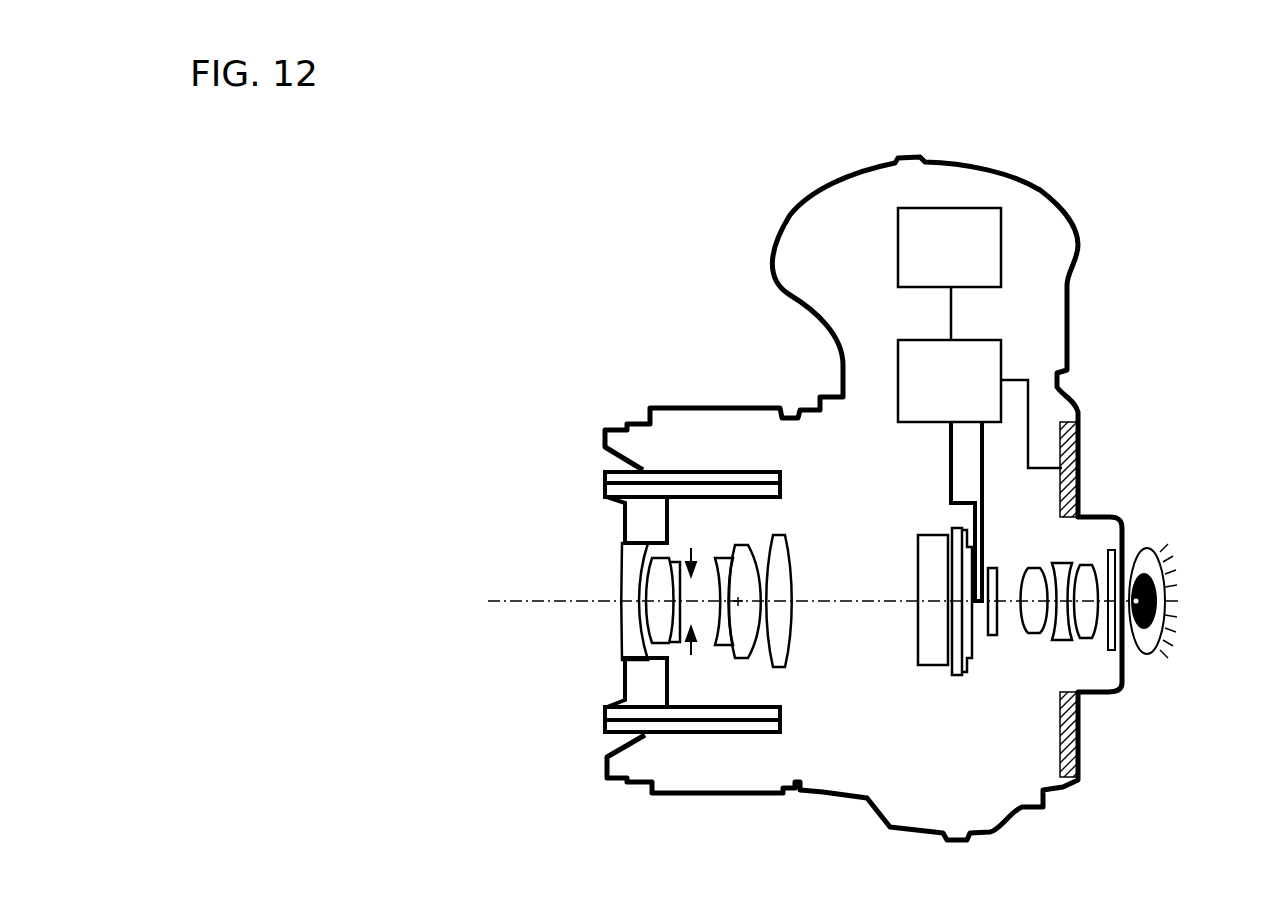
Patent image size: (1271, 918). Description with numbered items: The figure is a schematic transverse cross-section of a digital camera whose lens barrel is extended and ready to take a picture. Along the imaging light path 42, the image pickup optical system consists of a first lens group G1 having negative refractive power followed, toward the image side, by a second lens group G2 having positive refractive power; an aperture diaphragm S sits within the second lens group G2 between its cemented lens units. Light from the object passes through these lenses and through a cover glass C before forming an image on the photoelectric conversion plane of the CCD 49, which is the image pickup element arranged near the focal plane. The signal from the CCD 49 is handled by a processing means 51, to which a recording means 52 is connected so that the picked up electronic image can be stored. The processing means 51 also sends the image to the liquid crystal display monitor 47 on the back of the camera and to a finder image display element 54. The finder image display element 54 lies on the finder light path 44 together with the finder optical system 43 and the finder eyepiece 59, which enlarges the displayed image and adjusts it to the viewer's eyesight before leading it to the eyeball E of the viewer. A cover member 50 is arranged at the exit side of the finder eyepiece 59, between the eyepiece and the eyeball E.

The imaging light path 42 is at (792, 601).
The first lens group G1 is at (616, 555).
The second lens group G2 is at (744, 537).
The aperture diaphragm S is at (693, 645).
The cover glass C is at (932, 660).
The CCD 49 is at (958, 535).
The finder light path 44 is at (1008, 600).
The finder image display element 54 is at (993, 636).
The finder optical system 43 is at (1060, 560).
The finder eyepiece 59 is at (1054, 586).
The liquid crystal display monitor 47 is at (1078, 466).
The cover member 50 is at (1122, 644).
The eyeball E is at (1152, 538).
The processing means 51 is at (898, 355).
The recording means 52 is at (898, 247).